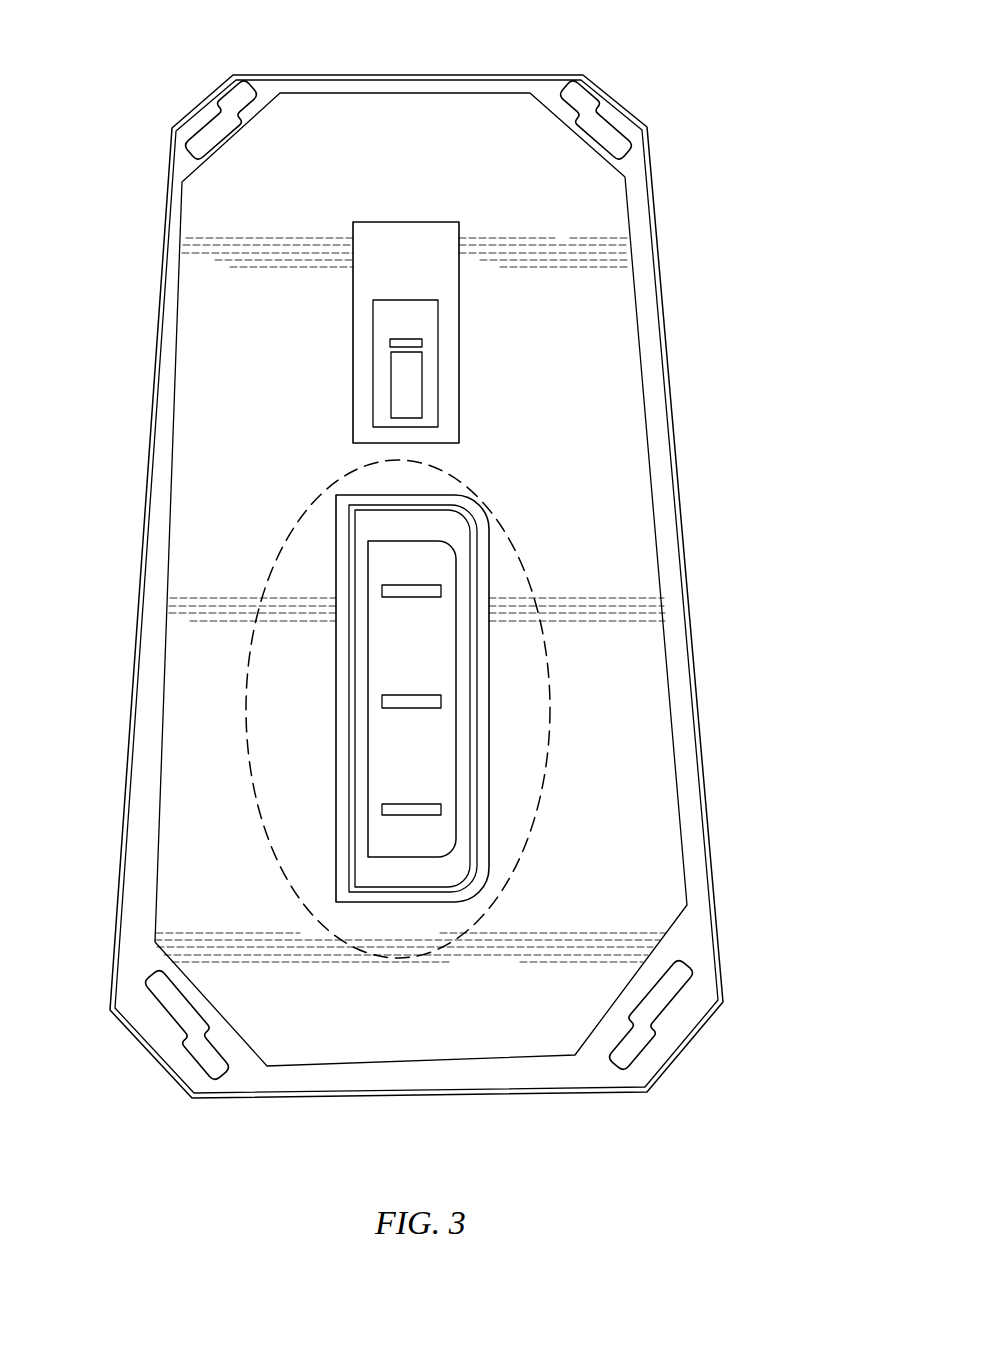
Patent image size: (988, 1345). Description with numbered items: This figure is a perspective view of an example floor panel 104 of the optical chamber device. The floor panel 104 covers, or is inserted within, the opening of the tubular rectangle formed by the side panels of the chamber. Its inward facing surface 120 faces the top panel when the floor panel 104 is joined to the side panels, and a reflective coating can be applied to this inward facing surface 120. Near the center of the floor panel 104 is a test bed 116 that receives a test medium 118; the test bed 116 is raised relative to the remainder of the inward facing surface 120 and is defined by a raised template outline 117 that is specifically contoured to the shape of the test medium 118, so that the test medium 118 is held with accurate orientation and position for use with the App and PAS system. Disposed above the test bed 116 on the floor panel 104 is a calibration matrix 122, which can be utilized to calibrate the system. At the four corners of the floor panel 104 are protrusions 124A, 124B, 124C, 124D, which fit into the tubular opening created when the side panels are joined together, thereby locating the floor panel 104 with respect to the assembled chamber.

The floor panel 104 is at (587, 42).
The inward facing surface 120 is at (610, 357).
The calibration matrix 122 is at (396, 222).
The test bed 116 is at (510, 709).
The raised template outline 117 is at (478, 858).
The test medium 118 is at (456, 580).
The protrusion 124A is at (225, 113).
The protrusion 124B is at (590, 122).
The protrusion 124C is at (638, 1028).
The protrusion 124D is at (195, 1027).